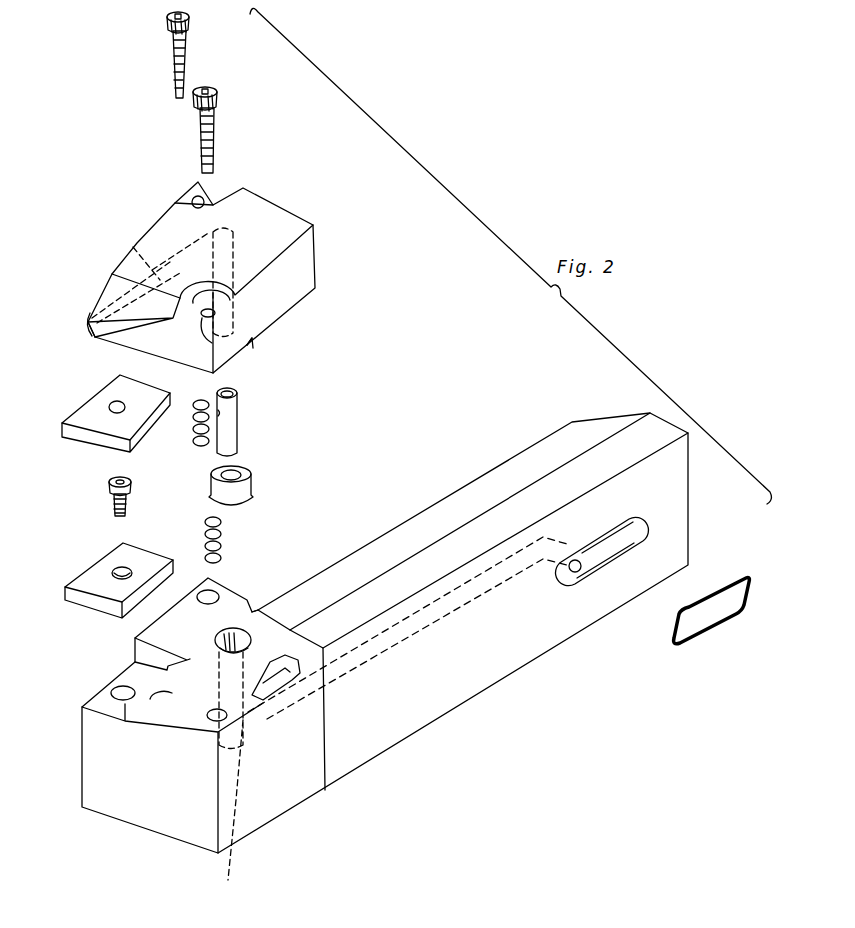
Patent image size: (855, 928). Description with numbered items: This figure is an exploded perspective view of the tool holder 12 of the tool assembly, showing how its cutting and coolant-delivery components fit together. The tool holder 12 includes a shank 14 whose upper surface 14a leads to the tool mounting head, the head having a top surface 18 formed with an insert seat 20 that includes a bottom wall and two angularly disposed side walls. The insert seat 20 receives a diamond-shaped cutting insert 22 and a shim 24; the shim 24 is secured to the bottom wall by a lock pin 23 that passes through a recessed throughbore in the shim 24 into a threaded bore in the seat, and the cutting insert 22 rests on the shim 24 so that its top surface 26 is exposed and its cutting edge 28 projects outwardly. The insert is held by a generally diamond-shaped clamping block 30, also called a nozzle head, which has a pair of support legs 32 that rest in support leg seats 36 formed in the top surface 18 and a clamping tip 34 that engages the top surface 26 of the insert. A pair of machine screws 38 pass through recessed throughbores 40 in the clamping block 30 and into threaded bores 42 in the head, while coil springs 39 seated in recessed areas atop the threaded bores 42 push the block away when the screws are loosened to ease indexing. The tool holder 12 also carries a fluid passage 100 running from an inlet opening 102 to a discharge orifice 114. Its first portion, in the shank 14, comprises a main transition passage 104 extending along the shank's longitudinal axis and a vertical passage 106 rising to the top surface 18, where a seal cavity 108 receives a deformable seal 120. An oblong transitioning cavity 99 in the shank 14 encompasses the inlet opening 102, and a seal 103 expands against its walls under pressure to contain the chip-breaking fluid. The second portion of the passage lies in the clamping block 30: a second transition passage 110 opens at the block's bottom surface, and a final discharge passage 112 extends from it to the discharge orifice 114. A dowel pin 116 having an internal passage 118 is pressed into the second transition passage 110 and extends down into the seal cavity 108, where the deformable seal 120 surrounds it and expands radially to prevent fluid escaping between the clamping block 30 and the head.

The tool holder 12 is at (541, 748).
The shank 14 is at (356, 651).
The top surface of body 14a is at (510, 465).
The top surface 18 is at (123, 722).
The insert seat 20 is at (100, 703).
The cutting insert 22 is at (95, 424).
The lock pin 23 is at (108, 494).
The shim 24 is at (98, 590).
The top surface 26 is at (108, 400).
The cutting edge 28 is at (60, 431).
The clamping block 30 is at (200, 275).
The support legs 32 is at (283, 330).
The clamping tip 34 is at (93, 335).
The support leg seats 36 is at (262, 612).
The machine screws 38 is at (215, 117).
The coil springs 39 is at (222, 524).
The recessed throughbores 40 is at (195, 198).
The threaded bores 42 is at (172, 697).
The oblong transitioning cavity 99 is at (596, 625).
The fluid passage 100 is at (257, 636).
The inlet opening 102 is at (587, 582).
The seal 103 is at (678, 648).
The main transition passage 104 is at (485, 582).
The vertical passage 106 is at (216, 774).
The seal cavity 108 is at (322, 652).
The second transition passage 110 is at (297, 304).
The final discharge passage 112 is at (131, 252).
The discharge orifice 114 is at (90, 318).
The dowel pin 116 is at (258, 422).
The internal passage 118 is at (240, 403).
The deformable seal 120 is at (250, 486).